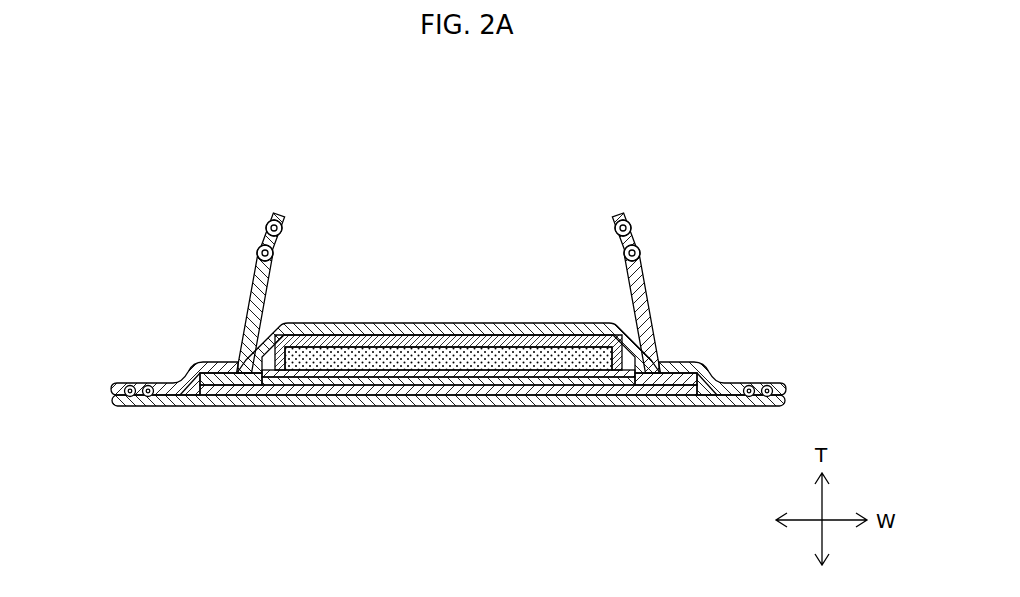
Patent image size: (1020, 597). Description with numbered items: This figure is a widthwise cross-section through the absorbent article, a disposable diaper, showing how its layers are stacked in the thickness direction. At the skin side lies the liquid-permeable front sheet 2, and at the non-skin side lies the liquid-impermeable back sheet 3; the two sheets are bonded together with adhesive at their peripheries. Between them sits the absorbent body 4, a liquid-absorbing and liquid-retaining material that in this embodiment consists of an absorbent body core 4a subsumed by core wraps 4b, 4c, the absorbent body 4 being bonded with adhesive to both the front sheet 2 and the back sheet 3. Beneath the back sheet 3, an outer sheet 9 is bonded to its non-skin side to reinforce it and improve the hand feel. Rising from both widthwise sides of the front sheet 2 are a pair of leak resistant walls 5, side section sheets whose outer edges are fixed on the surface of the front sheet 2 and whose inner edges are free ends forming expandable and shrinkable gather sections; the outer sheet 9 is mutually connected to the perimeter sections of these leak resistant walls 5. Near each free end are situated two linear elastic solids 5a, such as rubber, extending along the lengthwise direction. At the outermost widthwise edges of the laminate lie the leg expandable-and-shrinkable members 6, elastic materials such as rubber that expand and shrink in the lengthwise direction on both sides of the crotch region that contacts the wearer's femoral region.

The front sheet 2 is at (320, 326).
The back sheet 3 is at (345, 392).
The absorbent body 4 is at (448, 230).
The absorbent body core 4a is at (440, 358).
The core wrap 4b is at (386, 336).
The core wrap 4c is at (490, 371).
The leak resistant wall 5 is at (245, 302).
The linear elastic solid 5a is at (259, 247).
The leg expandable-and-shrinkable member 6 is at (148, 385).
The outer sheet 9 is at (478, 400).